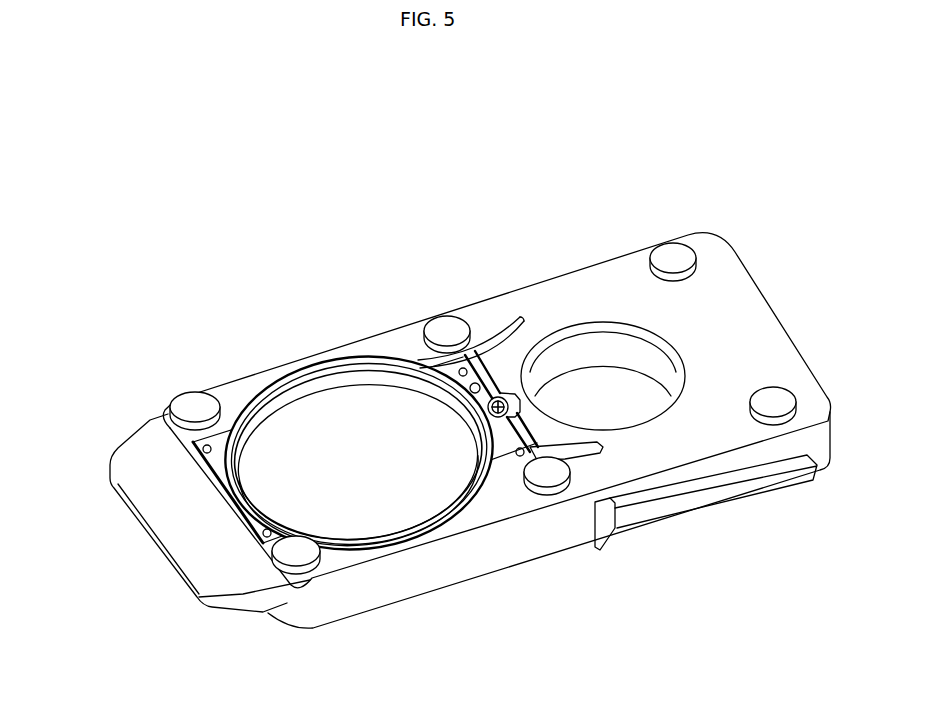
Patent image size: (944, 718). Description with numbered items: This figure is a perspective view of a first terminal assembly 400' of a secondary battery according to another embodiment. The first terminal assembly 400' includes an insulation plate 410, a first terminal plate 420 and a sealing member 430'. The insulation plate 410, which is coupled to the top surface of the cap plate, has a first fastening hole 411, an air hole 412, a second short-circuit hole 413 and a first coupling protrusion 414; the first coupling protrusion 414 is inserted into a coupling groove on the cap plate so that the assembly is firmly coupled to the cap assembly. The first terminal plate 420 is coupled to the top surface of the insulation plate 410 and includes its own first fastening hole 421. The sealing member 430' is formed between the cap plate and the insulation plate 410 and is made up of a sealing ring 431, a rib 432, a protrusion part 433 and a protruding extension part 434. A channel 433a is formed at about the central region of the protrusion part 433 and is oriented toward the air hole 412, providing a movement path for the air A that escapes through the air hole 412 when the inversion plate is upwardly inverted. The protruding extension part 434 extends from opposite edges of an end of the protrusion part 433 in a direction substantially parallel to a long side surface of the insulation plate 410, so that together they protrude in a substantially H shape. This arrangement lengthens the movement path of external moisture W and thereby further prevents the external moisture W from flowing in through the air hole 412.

The first terminal assembly 400' is at (461, 445).
The insulation plate 410 is at (753, 337).
The first fastening hole 411 is at (681, 303).
The air hole 412 is at (492, 400).
The second short-circuit hole 413 is at (280, 393).
The first coupling protrusion 414 is at (190, 405).
The first terminal plate 420 is at (361, 476).
The first fastening hole 421 is at (664, 370).
The sealing member 430' is at (405, 462).
The sealing ring 431 is at (370, 545).
The rib 432 is at (490, 493).
The protrusion part 433 is at (506, 490).
The channel 433a is at (515, 398).
The protruding extension part 434 is at (565, 470).
The air A is at (503, 398).
The external moisture W is at (597, 500).